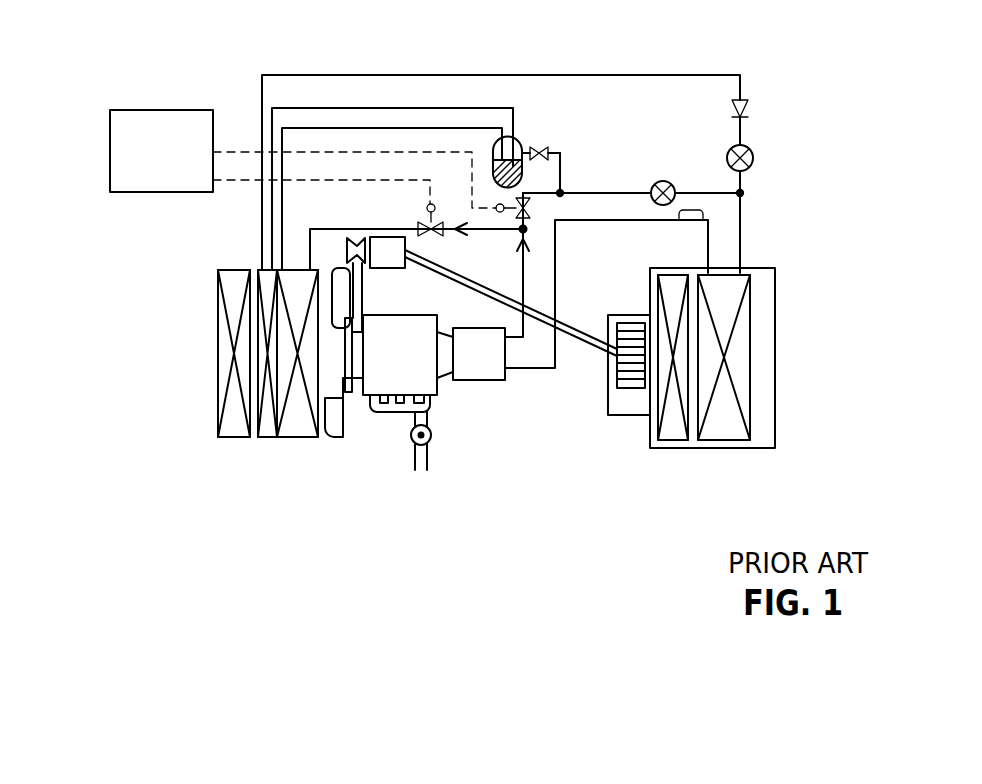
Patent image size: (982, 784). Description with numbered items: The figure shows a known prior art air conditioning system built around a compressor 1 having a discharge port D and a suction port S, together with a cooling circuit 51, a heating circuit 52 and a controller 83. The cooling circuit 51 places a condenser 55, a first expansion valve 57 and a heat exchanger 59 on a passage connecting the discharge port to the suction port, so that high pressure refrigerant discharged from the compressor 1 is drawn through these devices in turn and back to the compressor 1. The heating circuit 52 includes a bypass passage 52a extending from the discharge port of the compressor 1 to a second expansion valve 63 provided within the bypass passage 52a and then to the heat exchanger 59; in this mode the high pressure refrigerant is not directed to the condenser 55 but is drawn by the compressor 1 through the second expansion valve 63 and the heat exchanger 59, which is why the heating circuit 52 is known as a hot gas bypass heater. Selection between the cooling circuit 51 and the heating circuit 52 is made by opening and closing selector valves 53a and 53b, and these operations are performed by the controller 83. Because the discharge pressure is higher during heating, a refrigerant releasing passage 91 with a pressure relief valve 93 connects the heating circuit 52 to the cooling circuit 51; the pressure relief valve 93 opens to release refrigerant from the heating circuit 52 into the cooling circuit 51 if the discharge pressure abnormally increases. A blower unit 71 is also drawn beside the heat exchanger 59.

The compressor 1 is at (473, 380).
The cooling circuit 51 is at (452, 75).
The heating circuit 52 is at (617, 193).
The bypass passage 52a is at (710, 195).
The selector valve 53a is at (418, 226).
The selector valve 53b is at (537, 210).
The condenser 55 is at (295, 437).
The first expansion valve 57 is at (751, 146).
The heat exchanger 59 is at (772, 317).
The second expansion valve 63 is at (668, 181).
The blower 71 is at (672, 448).
The controller 83 is at (120, 163).
The refrigerant releasing passage 91 is at (562, 168).
The pressure relief valve 93 is at (537, 147).